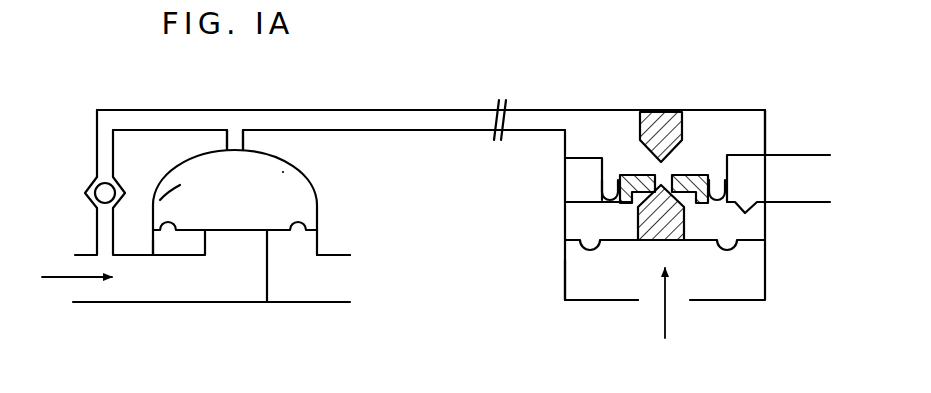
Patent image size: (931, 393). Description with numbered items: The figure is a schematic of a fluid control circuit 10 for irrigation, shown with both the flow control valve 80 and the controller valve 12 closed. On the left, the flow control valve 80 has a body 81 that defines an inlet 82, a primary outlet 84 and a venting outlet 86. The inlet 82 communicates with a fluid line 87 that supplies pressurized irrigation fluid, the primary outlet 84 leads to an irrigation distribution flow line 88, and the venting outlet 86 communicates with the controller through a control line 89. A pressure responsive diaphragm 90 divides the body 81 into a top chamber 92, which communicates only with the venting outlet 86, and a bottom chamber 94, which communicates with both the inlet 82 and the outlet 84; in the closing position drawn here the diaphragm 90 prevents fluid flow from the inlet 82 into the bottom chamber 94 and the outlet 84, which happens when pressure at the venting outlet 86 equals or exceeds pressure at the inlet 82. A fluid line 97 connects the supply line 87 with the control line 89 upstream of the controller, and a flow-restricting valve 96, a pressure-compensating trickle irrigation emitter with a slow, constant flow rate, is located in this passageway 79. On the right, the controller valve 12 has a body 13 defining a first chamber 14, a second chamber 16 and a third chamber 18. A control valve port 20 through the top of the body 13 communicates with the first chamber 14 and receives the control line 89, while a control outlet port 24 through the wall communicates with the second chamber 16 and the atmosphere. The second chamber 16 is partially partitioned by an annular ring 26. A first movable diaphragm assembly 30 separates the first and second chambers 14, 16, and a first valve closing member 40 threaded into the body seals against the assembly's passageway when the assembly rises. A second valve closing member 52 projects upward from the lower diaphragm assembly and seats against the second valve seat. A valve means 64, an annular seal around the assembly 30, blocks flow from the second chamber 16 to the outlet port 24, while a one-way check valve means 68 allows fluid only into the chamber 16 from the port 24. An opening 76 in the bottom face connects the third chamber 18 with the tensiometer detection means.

The fluid control circuit 10 is at (384, 88).
The controller valve 12 is at (656, 82).
The body 13 is at (767, 134).
The first chamber 14 is at (575, 141).
The second chamber 16 is at (572, 222).
The third chamber 18 is at (580, 282).
The control valve port 20 is at (568, 118).
The control outlet port 24 is at (792, 186).
The annular ring 26 is at (686, 204).
The first movable diaphragm assembly 30 is at (686, 175).
The first valve closing member 40 is at (676, 112).
The second valve closing member 52 is at (676, 242).
The valve means 64 is at (604, 178).
The one-way check valve means 68 is at (712, 201).
The opening 76 is at (672, 295).
The passage 79 is at (100, 232).
The flow control valve 80 is at (326, 196).
The body 81 is at (283, 172).
The inlet 82 is at (232, 270).
The primary outlet 84 is at (290, 257).
The venting outlet 86 is at (234, 160).
The fluid line 87 is at (92, 288).
The irrigation distribution flow line 88 is at (347, 285).
The control line 89 is at (456, 110).
The pressure responsive diaphragm 90 is at (233, 229).
The top chamber 92 is at (203, 187).
The bottom chamber 94 is at (160, 247).
The valve 96 is at (78, 190).
The fluid line 97 is at (97, 145).